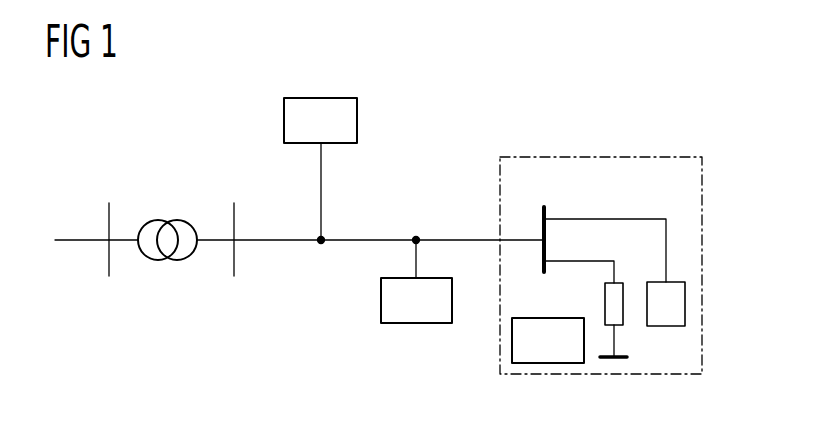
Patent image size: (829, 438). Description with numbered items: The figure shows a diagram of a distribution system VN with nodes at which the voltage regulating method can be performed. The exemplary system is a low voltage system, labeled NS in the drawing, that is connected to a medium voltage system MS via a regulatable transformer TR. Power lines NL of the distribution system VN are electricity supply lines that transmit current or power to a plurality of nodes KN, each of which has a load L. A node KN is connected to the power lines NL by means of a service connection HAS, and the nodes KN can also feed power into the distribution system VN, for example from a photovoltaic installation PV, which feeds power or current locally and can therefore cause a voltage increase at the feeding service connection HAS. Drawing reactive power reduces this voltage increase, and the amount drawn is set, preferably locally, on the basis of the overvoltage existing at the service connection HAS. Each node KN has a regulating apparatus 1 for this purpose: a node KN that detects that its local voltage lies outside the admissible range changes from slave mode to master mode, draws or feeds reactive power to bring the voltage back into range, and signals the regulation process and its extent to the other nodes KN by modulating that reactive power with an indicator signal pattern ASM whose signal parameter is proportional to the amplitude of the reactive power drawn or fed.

The medium voltage system MS is at (109, 224).
The low-voltage network NS is at (236, 224).
The regulatable transformer TR is at (160, 260).
The power lines NL is at (368, 240).
The nodes KN is at (357, 122).
The indicator signal pattern ASM is at (432, 240).
The distribution system VN is at (531, 97).
The service connection HAS is at (543, 225).
The photovoltaic installation PV is at (685, 300).
The load L is at (605, 297).
The regulating apparatus 1 is at (512, 344).